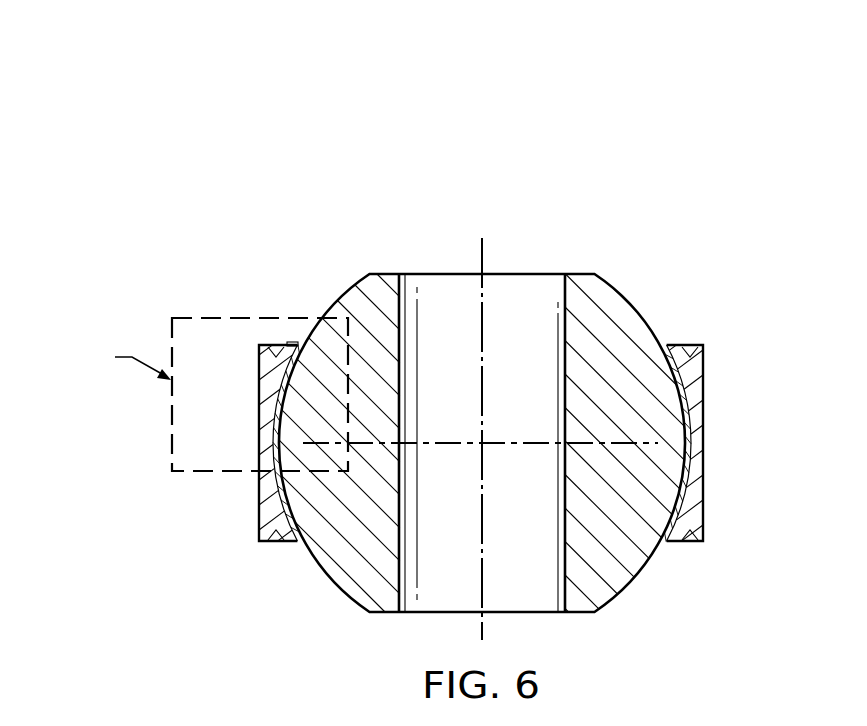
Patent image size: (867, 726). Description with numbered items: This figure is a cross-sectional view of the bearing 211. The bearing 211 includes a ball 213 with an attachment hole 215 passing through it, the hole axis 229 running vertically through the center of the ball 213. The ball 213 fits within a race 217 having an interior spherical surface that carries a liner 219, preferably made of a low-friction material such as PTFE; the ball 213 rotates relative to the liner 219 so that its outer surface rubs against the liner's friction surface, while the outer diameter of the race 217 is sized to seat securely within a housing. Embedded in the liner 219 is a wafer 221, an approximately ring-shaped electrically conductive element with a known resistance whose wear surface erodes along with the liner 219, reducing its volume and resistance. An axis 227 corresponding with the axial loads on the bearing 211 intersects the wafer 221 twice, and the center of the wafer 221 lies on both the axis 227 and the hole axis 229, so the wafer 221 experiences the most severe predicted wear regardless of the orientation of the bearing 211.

The bearing 211 is at (375, 183).
The ball 213 is at (616, 291).
The attachment hole 215 is at (565, 293).
The race 217 is at (705, 512).
The liner 219 is at (303, 543).
The wafer 221 is at (277, 442).
The axis 227 is at (510, 441).
The hole axis 229 is at (482, 252).